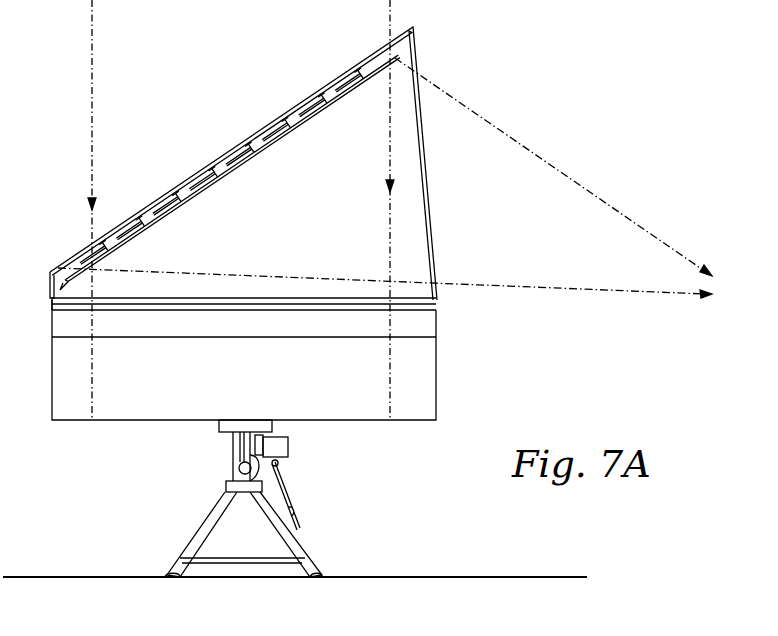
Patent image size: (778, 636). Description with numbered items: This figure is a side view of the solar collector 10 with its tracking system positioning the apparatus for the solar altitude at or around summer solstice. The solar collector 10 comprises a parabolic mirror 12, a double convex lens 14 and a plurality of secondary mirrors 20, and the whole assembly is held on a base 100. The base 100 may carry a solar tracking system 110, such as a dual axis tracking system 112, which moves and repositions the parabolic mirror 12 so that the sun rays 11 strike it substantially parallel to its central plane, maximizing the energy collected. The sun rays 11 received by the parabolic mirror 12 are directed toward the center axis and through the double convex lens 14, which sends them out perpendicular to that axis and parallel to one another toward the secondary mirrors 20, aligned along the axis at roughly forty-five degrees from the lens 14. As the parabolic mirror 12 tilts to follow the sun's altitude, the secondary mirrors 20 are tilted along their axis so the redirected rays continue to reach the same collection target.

The solar collector 10 is at (83, 162).
The sun rays 11 is at (90, 38).
The parabolic mirror 12 is at (438, 372).
The double convex lens 14 is at (405, 308).
The secondary mirrors 20 is at (262, 128).
The base 100 is at (180, 534).
The solar tracking system 110 is at (298, 449).
The dual axis tracking system 112 is at (237, 466).